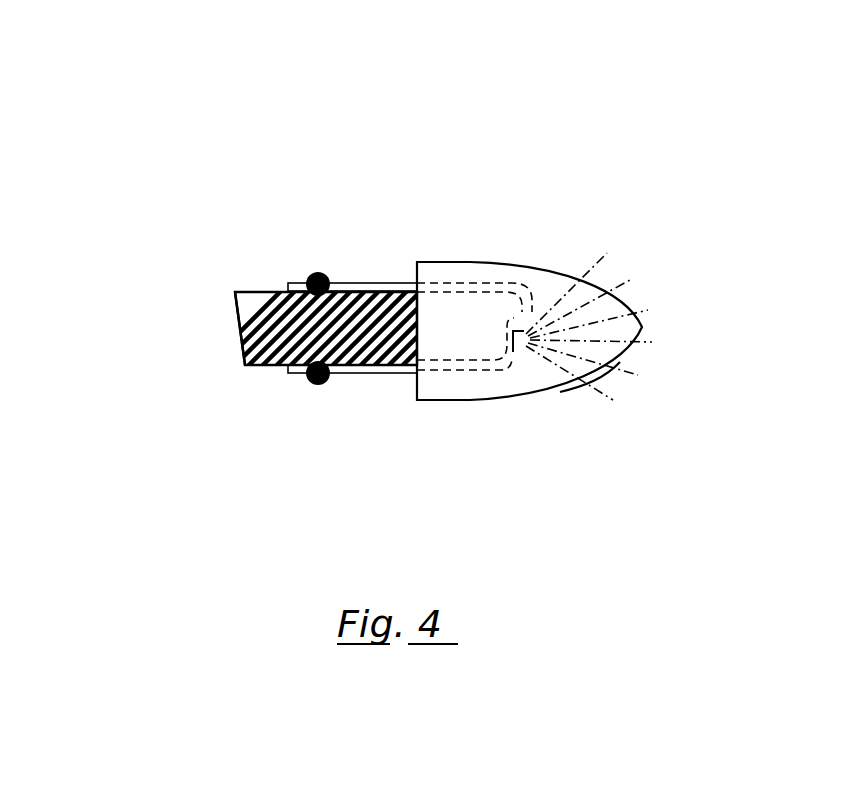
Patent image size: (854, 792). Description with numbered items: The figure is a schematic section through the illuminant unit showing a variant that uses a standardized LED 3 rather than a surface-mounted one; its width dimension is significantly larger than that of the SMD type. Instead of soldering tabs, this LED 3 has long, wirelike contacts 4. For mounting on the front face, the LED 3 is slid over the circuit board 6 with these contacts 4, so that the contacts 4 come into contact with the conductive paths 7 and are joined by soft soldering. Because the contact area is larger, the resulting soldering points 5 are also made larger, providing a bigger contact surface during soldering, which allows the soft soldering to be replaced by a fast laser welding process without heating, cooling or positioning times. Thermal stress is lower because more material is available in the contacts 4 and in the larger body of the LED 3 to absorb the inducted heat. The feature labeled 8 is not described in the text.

The LED 3 is at (543, 280).
The wirelike contacts 4 is at (382, 290).
The soldering points 5 is at (305, 266).
The circuit board 6 is at (295, 342).
The conductive paths 7 is at (237, 298).
The bulb envelope 8 is at (592, 390).